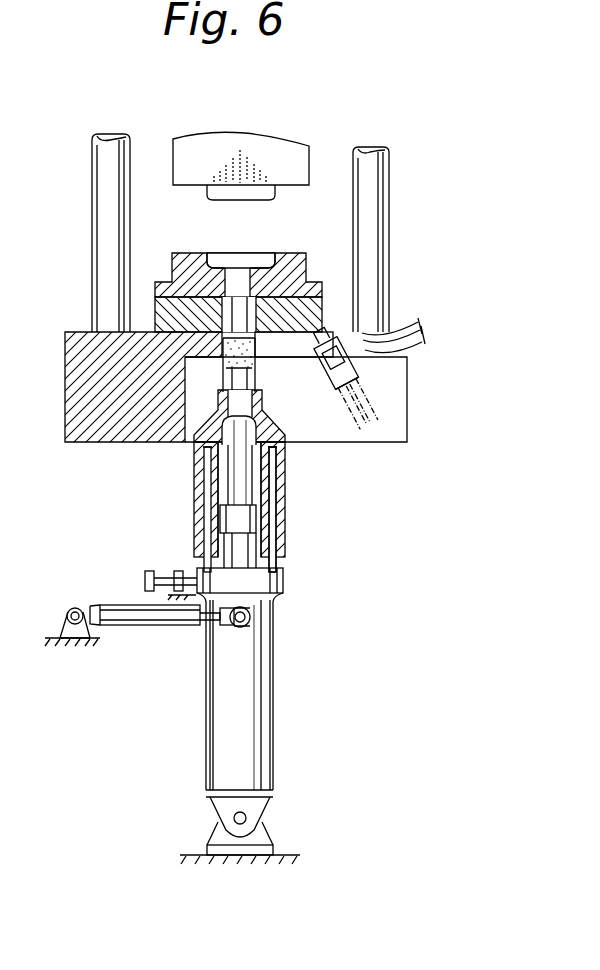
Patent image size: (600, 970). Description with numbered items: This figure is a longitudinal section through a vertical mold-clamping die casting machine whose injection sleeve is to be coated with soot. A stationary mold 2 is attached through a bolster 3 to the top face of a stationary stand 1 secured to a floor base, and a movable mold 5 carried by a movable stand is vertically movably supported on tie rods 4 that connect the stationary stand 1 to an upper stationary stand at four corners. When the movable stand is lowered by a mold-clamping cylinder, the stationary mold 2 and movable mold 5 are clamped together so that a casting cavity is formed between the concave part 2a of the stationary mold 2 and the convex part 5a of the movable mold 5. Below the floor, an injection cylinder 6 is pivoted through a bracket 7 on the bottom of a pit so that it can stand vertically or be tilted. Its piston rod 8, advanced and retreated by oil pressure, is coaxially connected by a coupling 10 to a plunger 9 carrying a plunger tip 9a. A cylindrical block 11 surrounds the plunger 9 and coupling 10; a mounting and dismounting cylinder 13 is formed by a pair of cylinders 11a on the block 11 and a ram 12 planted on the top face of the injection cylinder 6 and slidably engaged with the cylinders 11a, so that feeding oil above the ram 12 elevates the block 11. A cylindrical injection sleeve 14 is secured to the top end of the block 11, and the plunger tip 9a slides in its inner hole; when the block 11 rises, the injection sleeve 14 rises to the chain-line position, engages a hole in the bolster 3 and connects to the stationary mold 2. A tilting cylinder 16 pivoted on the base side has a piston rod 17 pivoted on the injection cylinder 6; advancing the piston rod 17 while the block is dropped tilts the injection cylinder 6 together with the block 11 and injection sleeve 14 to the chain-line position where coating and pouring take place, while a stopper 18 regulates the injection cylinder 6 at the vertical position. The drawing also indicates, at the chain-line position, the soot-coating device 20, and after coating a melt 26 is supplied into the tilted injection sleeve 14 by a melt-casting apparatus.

The stationary stand 1 is at (65, 365).
The stationary mold 2 is at (238, 254).
The concave part 2a is at (216, 262).
The bolster 3 is at (325, 325).
The tie rods 4 is at (92, 186).
The movable mold 5 is at (310, 165).
The convex part 5a is at (280, 194).
The injection cylinder 6 is at (276, 708).
The bracket 7 is at (265, 832).
The piston rod 8 is at (238, 575).
The plunger 9 is at (252, 480).
The plunger tip 9a is at (250, 377).
The coupling 10 is at (232, 520).
The cylindrical block 11 is at (196, 466).
The cylinders 11a is at (277, 462).
The ram 12 is at (210, 505).
The mounting and dismounting cylinder 13 is at (194, 489).
The injection sleeve 14 is at (256, 342).
The tilting cylinder 16 is at (130, 630).
The piston rod 17 is at (210, 640).
The stopper 18 is at (145, 580).
The powder feeder 20 is at (385, 349).
The melt 26 is at (228, 370).